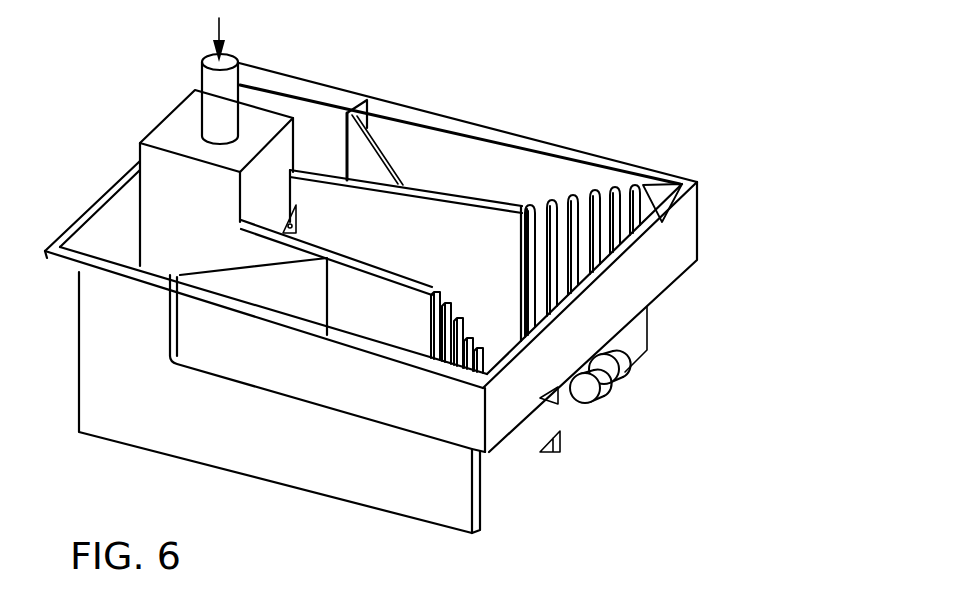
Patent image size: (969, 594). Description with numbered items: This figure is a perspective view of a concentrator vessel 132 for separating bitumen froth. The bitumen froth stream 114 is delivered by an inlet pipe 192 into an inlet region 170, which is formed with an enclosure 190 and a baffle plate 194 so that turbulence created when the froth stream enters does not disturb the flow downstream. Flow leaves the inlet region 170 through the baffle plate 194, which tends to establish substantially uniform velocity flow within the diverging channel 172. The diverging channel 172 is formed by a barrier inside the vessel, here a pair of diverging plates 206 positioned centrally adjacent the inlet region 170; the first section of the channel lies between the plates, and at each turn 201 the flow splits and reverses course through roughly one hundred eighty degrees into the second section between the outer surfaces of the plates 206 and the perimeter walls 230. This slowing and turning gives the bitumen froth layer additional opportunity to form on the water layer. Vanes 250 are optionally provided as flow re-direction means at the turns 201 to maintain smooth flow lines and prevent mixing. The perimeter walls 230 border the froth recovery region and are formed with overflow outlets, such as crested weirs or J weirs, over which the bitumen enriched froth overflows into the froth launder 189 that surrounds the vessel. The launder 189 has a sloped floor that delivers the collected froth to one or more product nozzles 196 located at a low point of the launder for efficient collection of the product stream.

The bitumen froth stream 114 is at (218, 31).
The concentrator vessel 132 is at (714, 202).
The inlet region 170 is at (172, 165).
The diverging channel 172 is at (449, 227).
The froth launder 189 is at (672, 250).
The enclosure 190 is at (169, 224).
The inlet pipe 192 is at (221, 79).
The baffle plate 194 is at (298, 230).
The product nozzle 196 is at (619, 372).
The turn 201 is at (524, 195).
The diverging plates 206 is at (380, 236).
The perimeter walls 230 is at (477, 143).
The vanes 250 is at (644, 184).